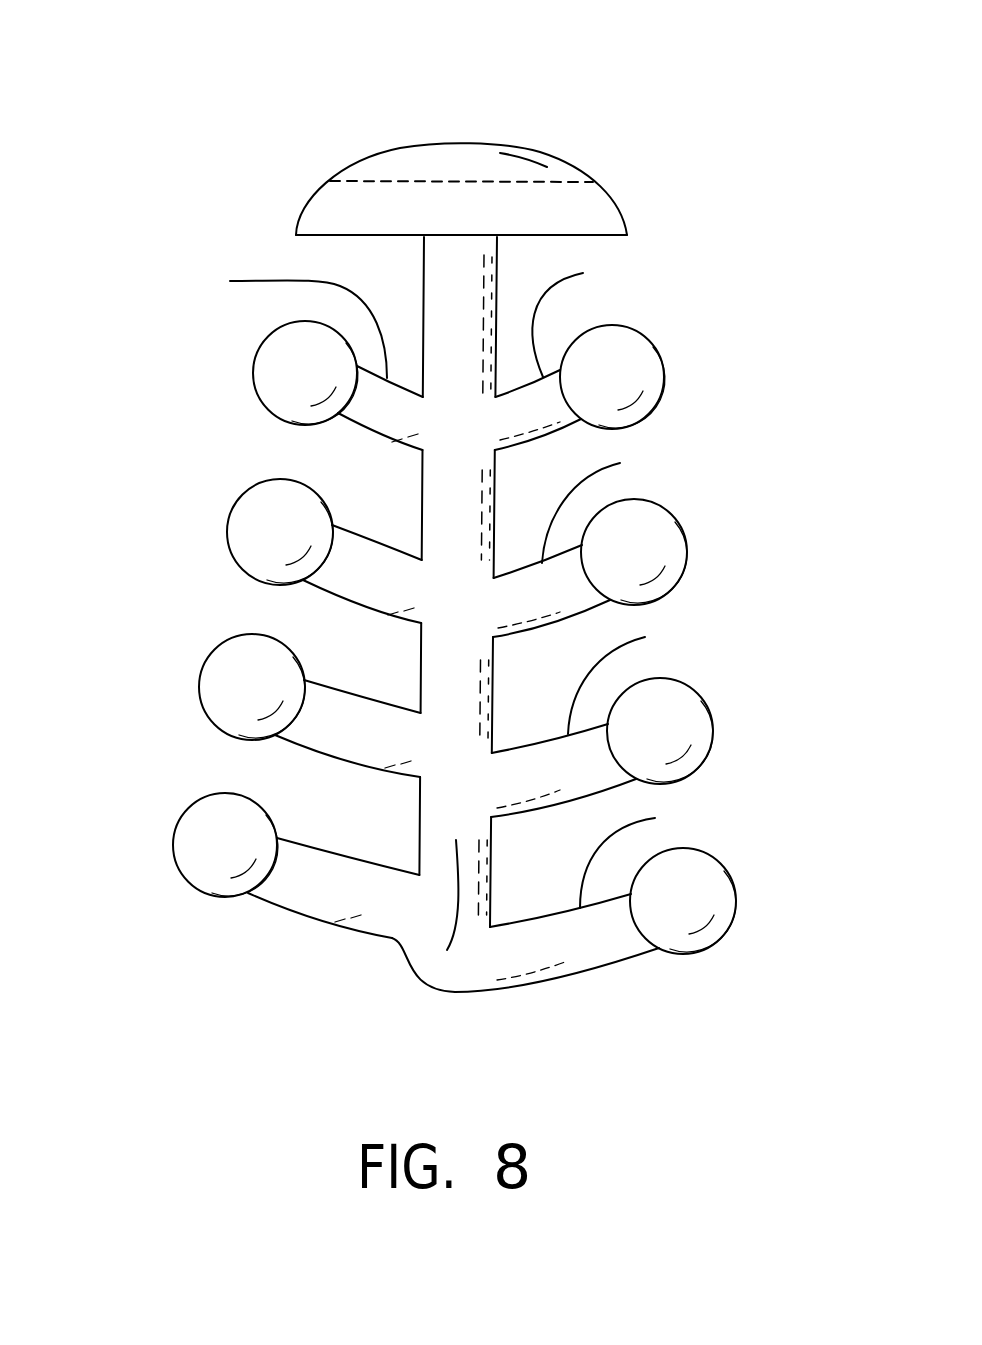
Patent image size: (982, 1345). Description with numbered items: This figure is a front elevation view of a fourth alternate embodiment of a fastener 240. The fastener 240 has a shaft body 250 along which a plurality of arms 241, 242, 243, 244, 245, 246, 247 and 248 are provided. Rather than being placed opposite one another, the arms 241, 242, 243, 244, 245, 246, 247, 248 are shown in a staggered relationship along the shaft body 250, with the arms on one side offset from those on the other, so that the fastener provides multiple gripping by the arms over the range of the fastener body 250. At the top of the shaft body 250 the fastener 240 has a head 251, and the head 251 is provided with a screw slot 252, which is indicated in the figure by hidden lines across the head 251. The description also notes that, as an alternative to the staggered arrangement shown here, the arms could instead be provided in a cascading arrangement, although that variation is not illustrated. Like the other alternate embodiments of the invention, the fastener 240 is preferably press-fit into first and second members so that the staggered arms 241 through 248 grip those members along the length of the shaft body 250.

The fastener 240 is at (486, 88).
The arm 241 is at (230, 281).
The arm 242 is at (327, 596).
The arm 243 is at (313, 758).
The arm 244 is at (272, 905).
The arm 245 is at (583, 273).
The arm 246 is at (620, 463).
The arm 247 is at (645, 637).
The arm 248 is at (655, 818).
The shaft body 250 is at (447, 950).
The head 251 is at (533, 155).
The screw slot 252 is at (407, 181).